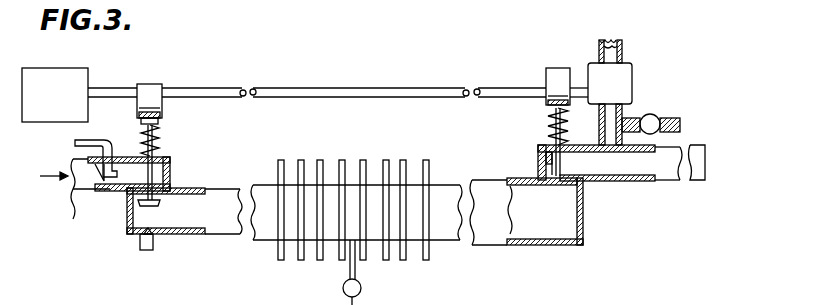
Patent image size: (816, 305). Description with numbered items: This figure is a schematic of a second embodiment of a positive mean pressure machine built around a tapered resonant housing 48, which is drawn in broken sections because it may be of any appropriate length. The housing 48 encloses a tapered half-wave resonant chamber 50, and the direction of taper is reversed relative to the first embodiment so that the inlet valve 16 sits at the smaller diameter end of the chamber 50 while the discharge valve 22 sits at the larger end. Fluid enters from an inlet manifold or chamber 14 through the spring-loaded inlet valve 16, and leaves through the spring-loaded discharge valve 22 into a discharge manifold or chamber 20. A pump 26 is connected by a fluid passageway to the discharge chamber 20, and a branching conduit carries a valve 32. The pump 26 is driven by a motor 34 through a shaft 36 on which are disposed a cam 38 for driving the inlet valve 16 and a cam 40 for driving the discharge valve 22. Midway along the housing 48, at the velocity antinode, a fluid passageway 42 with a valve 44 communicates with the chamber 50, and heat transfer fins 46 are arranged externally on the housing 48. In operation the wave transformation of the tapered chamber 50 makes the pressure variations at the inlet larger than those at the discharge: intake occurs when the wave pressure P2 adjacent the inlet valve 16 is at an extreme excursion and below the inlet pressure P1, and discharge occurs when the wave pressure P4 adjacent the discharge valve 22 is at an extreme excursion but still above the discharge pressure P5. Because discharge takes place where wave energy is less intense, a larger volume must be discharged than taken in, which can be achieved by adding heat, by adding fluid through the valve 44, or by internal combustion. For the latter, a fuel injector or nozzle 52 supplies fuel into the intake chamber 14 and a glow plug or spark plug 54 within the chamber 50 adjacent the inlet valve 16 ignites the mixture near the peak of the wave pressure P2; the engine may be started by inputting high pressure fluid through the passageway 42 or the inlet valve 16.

The inlet manifold or chamber 14 is at (82, 181).
The inlet valve 16 is at (168, 176).
The discharge manifold or chamber 20 is at (669, 172).
The discharge valve 22 is at (540, 165).
The pump 26 is at (625, 86).
The valve 32 is at (653, 114).
The motor 34 is at (60, 106).
The shaft 36 is at (341, 97).
The cam 38 is at (152, 92).
The cam 40 is at (556, 80).
The fluid passageway 42 is at (362, 268).
The valve 44 is at (362, 288).
The heat transfer fins 46 is at (342, 160).
The resonant housing 48 is at (270, 222).
The resonant chamber 50 is at (200, 220).
The fuel injector or nozzle 52 is at (108, 179).
The glow plug or spark plug 54 is at (138, 244).
The inlet pressure P1 is at (132, 172).
The wave pressure adjacent the inlet valve P2 is at (152, 220).
The wave pressure adjacent the discharge valve P4 is at (552, 224).
The discharge pressure P5 is at (605, 172).